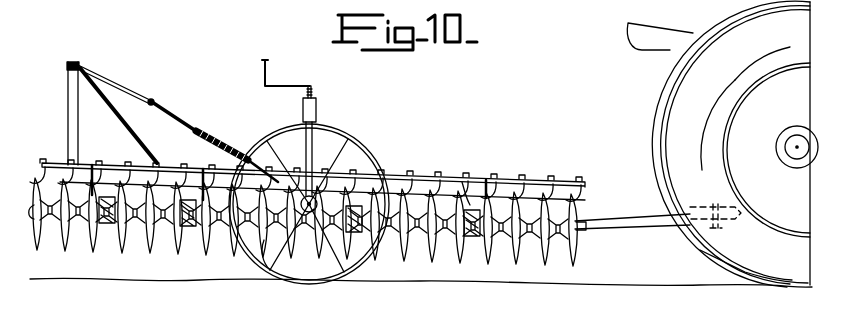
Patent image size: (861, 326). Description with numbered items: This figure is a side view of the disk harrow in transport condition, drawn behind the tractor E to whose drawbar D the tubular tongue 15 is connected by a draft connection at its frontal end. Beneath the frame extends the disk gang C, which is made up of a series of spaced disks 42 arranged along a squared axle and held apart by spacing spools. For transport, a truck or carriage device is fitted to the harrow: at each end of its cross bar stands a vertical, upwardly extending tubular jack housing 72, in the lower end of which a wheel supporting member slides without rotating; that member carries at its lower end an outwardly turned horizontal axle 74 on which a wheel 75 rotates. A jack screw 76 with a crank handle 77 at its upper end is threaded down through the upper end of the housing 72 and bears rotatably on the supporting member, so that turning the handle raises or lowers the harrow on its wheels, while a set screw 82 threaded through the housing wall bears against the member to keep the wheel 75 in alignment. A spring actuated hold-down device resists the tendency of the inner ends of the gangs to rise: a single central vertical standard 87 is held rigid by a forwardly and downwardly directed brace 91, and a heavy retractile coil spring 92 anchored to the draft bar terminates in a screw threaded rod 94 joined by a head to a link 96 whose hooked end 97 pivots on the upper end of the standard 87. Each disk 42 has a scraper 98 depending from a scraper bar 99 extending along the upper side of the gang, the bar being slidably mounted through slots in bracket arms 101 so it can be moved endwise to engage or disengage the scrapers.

The tongue 15 is at (572, 185).
The disks 42 is at (574, 268).
The jack housings 72 is at (318, 110).
The horizontal axles 74 is at (306, 232).
The wheels 75 is at (253, 262).
The jack screws 76 is at (314, 92).
The crank handles 77 is at (270, 74).
The set screws 82 is at (337, 170).
The mast 87 is at (68, 100).
The brace 91 is at (121, 118).
The retractile coil springs 92 is at (214, 140).
The screw threaded rods 94 is at (170, 112).
The links 96 is at (124, 87).
The hooked ends of links 97 is at (80, 62).
The scraper 98 is at (462, 182).
The scraper bars 99 is at (530, 180).
The bracket arms 101 is at (488, 181).
The disk gang C is at (194, 249).
The drawbar D is at (698, 228).
The tractor E is at (653, 124).